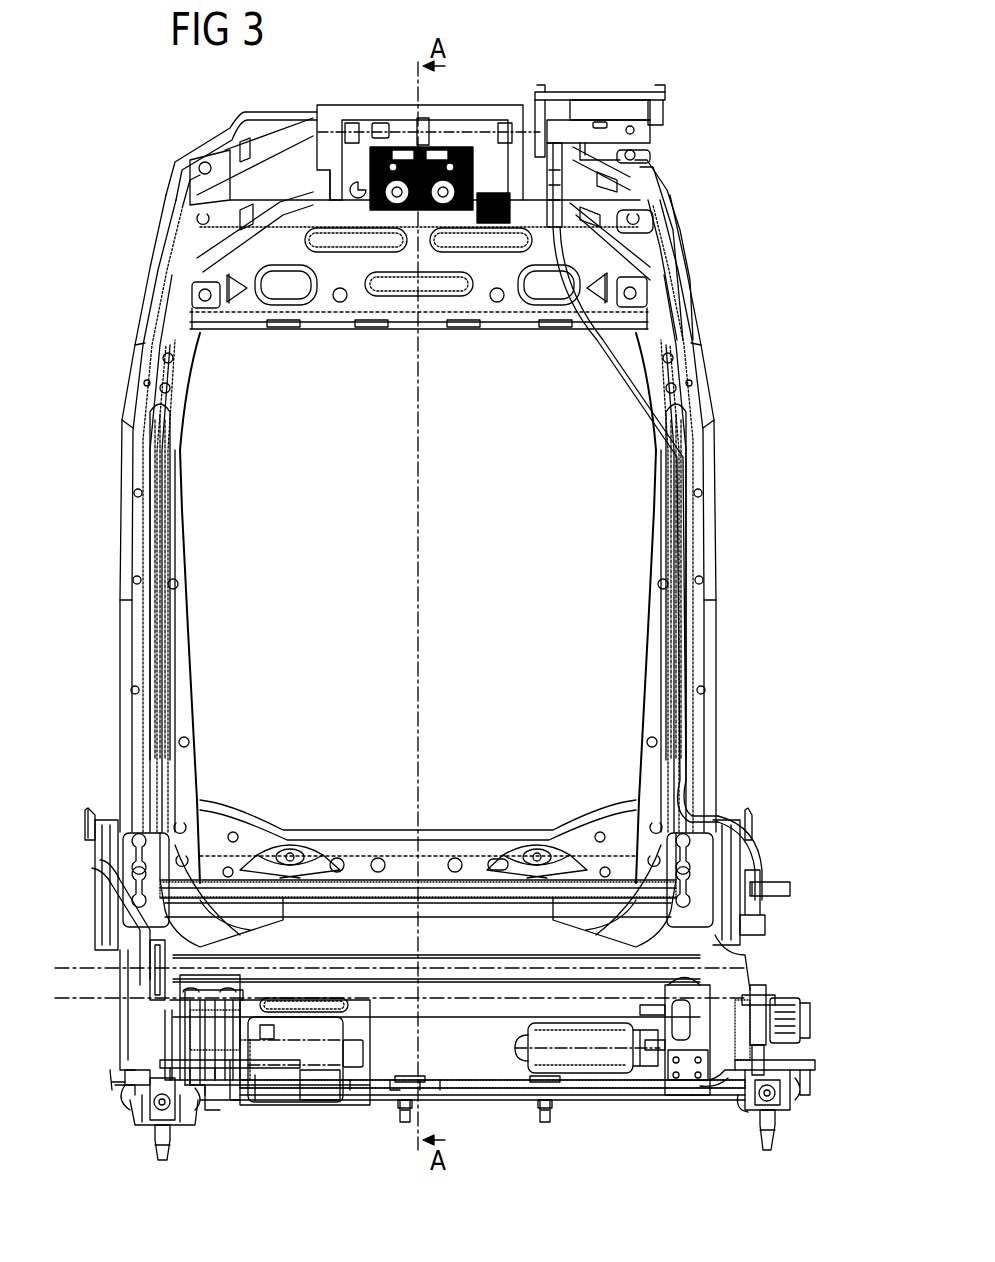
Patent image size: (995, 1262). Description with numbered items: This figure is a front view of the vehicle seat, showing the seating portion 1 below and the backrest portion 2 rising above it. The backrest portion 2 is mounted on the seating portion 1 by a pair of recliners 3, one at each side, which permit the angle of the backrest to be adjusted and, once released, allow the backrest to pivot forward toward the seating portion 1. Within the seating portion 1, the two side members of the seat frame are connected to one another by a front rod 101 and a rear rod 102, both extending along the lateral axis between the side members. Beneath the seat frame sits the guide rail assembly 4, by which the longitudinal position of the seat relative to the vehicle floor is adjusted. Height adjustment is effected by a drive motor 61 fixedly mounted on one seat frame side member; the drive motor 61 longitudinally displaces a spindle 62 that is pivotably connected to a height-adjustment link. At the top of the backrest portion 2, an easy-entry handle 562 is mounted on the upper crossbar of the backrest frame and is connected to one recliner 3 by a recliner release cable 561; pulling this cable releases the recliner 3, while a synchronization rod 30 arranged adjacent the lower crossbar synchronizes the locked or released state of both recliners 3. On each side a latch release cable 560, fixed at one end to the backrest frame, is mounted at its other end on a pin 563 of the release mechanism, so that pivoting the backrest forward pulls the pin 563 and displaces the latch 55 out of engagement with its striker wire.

The seating portion 1 is at (83, 972).
The backrest portion 2 is at (730, 421).
The recliner 3 is at (88, 852).
The guide rail assembly 4 is at (142, 1122).
The synchronization rod 30 is at (487, 885).
The latch 55 is at (768, 994).
The drive motor 61 is at (580, 1042).
The spindle 62 is at (687, 1010).
The front rod 101 is at (493, 964).
The rear rod 102 is at (458, 1008).
The latch release cable 560 is at (808, 1053).
The recliner release cable 561 is at (722, 830).
The easy-entry handle 562 is at (653, 120).
The pin 563 is at (790, 1007).